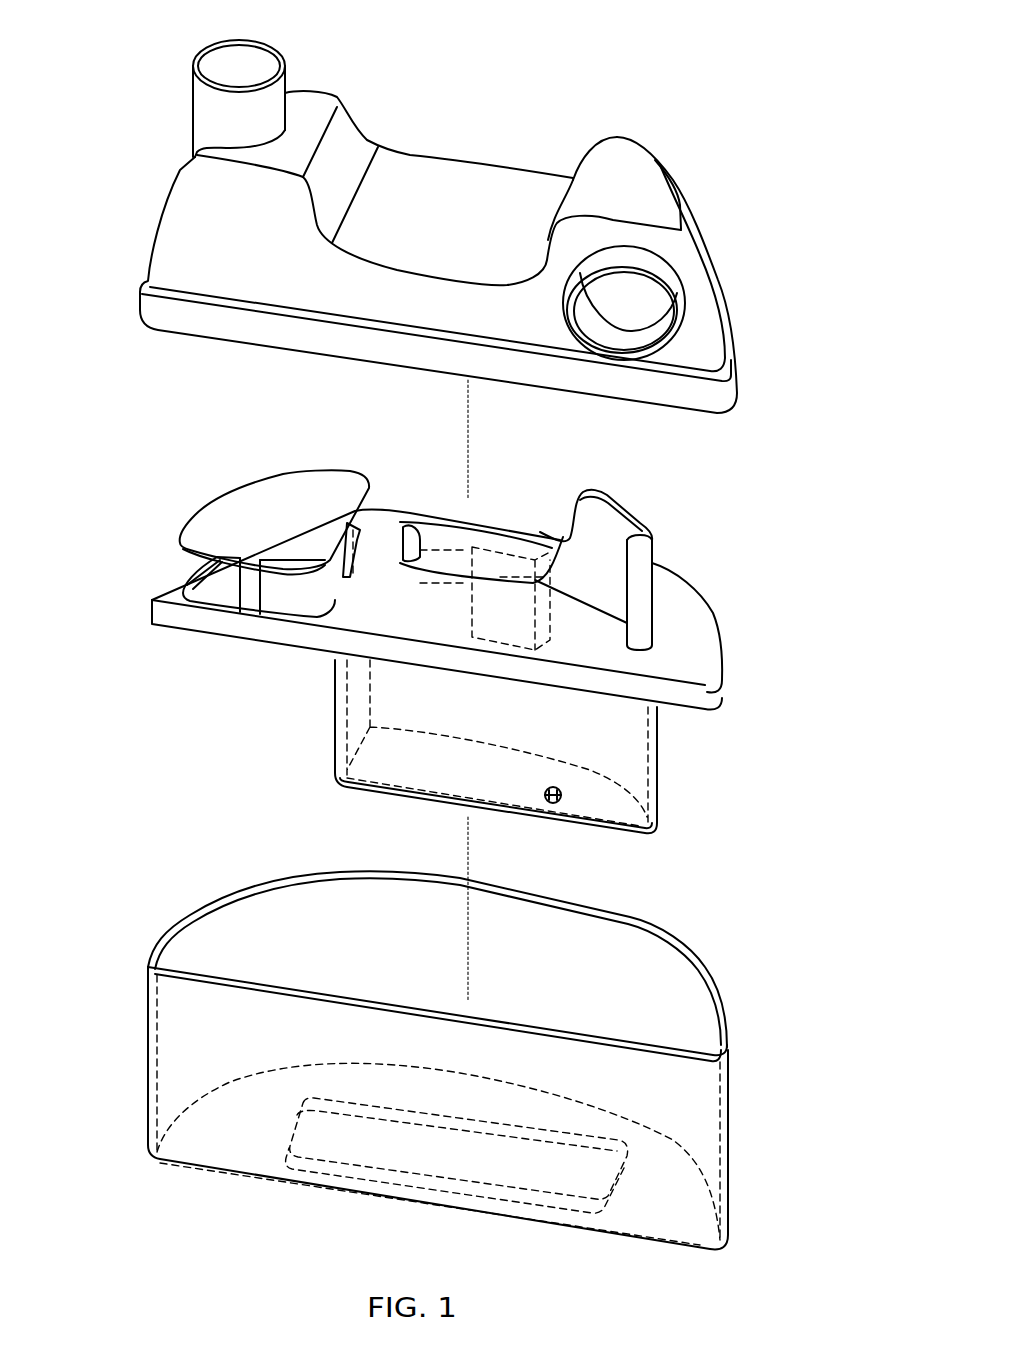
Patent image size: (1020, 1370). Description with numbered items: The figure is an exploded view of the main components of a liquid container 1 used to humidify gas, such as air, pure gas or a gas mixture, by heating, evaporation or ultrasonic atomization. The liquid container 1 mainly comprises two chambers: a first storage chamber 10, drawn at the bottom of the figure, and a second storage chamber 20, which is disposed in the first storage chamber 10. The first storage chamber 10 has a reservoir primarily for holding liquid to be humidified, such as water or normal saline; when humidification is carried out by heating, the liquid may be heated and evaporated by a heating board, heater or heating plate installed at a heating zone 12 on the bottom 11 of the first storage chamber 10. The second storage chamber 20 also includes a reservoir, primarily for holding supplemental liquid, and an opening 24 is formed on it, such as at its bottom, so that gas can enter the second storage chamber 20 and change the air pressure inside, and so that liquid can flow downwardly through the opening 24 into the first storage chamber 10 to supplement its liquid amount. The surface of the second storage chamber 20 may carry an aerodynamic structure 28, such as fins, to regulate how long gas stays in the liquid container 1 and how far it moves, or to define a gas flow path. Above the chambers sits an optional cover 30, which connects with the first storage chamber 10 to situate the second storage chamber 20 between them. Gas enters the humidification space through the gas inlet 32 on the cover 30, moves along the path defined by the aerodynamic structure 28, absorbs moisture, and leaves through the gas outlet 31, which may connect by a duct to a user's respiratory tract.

The liquid container 1 is at (748, 66).
The first storage chamber 10 is at (150, 1059).
The bottom 11 is at (228, 1160).
The heating zone 12 is at (572, 1193).
The second storage chamber 20 is at (340, 712).
The opening 24 is at (552, 817).
The aerodynamic structure 28 is at (618, 518).
The cover 30 is at (177, 210).
The gas outlet 31 is at (238, 58).
The gas inlet 32 is at (643, 298).